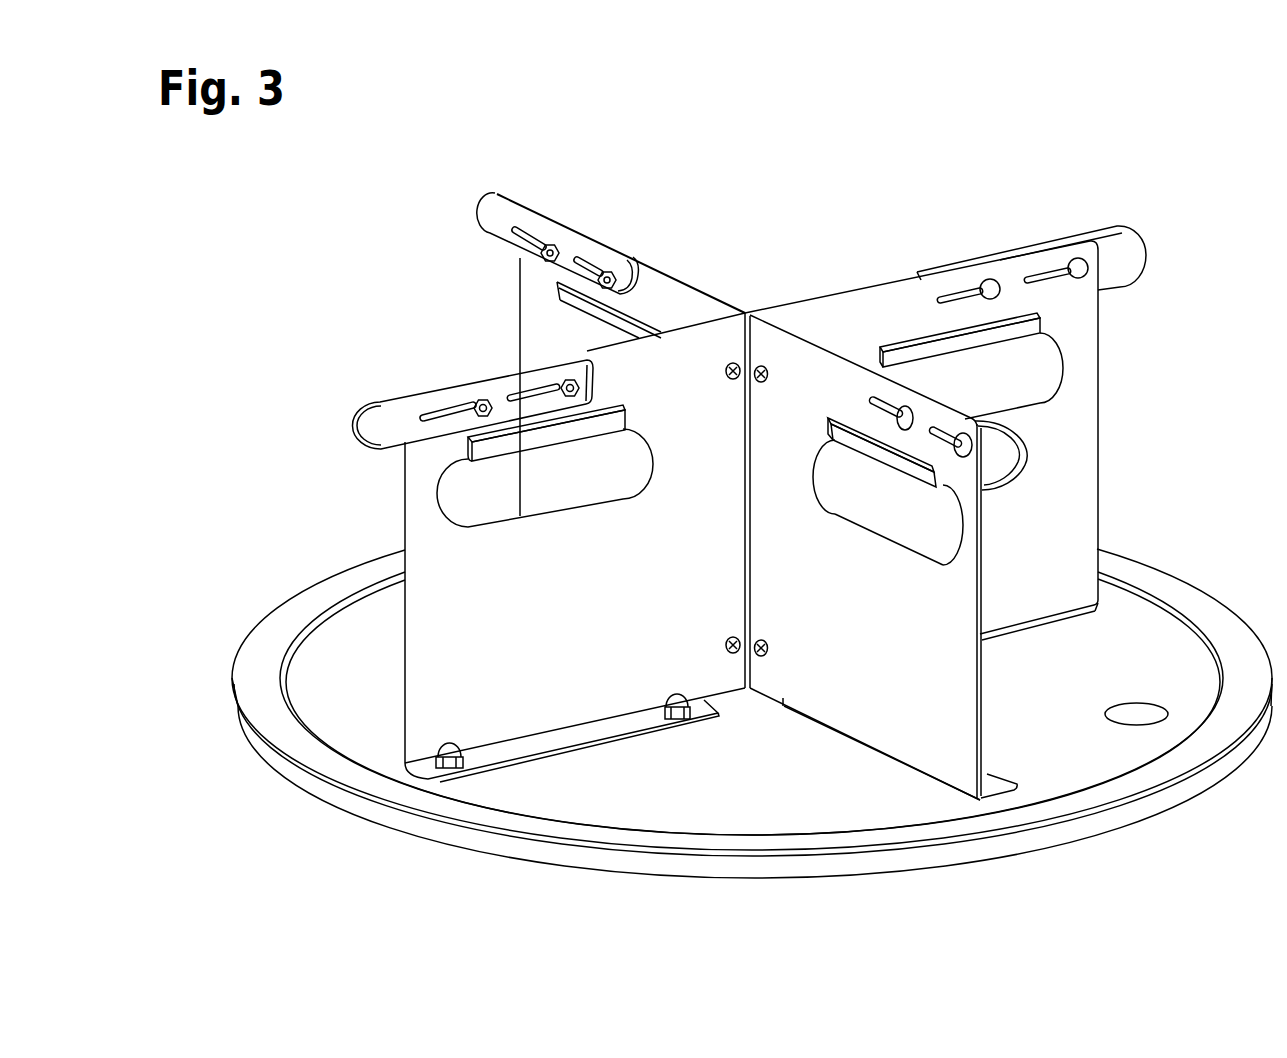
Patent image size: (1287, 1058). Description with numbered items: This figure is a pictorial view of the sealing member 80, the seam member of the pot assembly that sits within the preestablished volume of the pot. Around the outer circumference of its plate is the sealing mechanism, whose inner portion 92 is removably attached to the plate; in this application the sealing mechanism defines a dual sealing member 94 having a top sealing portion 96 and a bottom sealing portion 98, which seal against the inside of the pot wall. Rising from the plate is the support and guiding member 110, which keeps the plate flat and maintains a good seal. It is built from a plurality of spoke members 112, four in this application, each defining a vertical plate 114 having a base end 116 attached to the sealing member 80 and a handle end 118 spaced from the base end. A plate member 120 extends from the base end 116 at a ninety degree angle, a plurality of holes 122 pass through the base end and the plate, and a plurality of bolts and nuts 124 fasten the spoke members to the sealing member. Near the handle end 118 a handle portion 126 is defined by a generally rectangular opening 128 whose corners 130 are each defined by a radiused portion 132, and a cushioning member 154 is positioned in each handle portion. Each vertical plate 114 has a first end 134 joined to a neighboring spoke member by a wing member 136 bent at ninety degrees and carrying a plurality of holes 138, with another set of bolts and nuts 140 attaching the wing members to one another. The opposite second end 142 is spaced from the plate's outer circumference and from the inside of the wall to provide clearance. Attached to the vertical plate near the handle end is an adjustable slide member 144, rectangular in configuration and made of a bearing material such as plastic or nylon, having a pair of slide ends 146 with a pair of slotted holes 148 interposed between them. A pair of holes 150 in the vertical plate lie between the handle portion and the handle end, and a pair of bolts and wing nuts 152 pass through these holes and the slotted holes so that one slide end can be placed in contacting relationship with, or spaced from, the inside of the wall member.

The sealing member 80 is at (352, 330).
The inner portion 92 is at (300, 720).
The dual sealing member 94 is at (252, 737).
The top sealing portion 96 is at (310, 753).
The bottom sealing portion 98 is at (360, 823).
The support and guiding member 110 is at (317, 532).
The spoke member 112 is at (980, 750).
The vertical plate 114 is at (960, 700).
The base end 116 is at (507, 750).
The handle end 118 is at (708, 335).
The plate member 120 is at (571, 702).
The holes 122 is at (688, 718).
The bolts and nuts 124 is at (667, 727).
The handle portion 126 is at (850, 483).
The rectangular opening 128 is at (882, 532).
The corners 130 is at (950, 555).
The radiused portion 132 is at (953, 553).
The first end 134 is at (767, 540).
The wing member 136 is at (727, 570).
The holes 138 is at (732, 632).
The bolts and nuts 140 is at (727, 645).
The second end 142 is at (1100, 430).
The adjustable slide member 144 is at (998, 468).
The slide ends 146 is at (654, 300).
The slotted holes 148 is at (562, 384).
The holes 150 is at (900, 416).
The bolts and wing nuts 152 is at (548, 270).
The cushioning member 154 is at (618, 415).